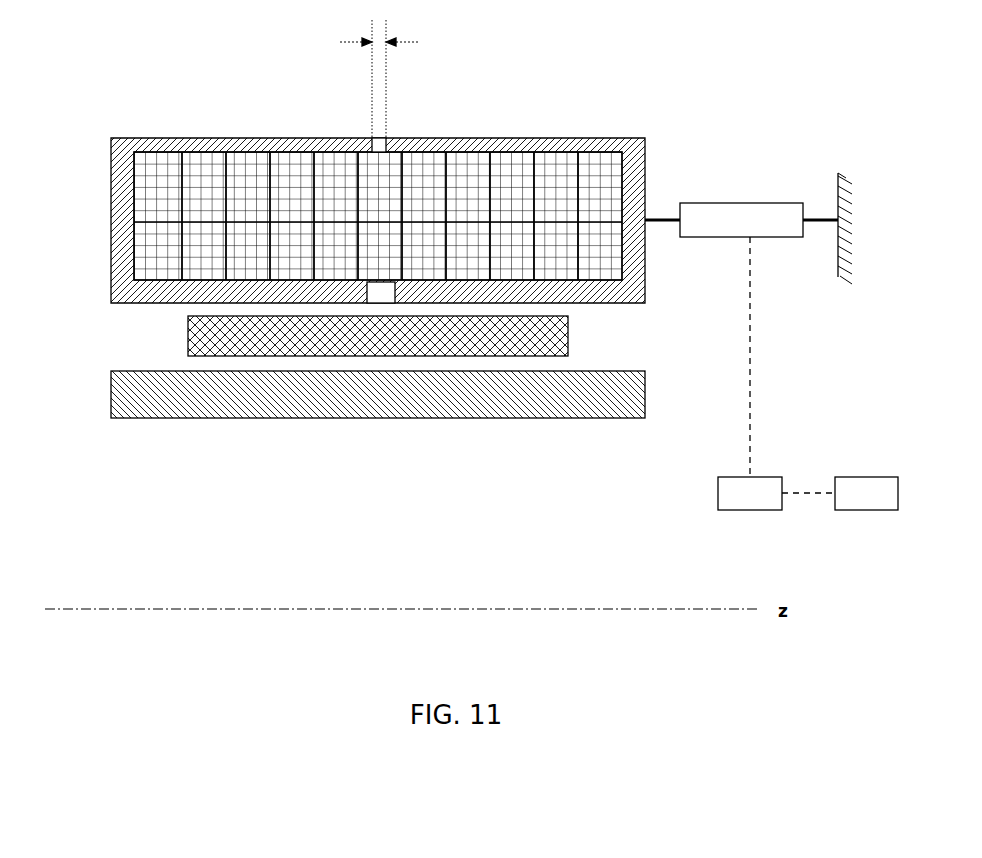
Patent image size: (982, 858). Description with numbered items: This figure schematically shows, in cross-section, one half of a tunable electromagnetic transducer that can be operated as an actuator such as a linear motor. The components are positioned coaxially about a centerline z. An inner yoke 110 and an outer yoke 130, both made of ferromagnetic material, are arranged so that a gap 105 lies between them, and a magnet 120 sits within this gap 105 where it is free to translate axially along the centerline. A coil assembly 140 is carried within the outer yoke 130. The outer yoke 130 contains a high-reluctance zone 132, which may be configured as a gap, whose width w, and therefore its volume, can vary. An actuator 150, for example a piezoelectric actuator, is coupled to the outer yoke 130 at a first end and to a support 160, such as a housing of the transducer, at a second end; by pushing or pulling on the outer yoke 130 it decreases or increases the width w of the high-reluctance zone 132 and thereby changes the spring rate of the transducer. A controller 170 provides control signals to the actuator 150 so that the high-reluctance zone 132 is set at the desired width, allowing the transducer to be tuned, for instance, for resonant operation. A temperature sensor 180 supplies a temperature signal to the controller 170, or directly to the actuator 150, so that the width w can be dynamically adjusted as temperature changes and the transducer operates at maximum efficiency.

The gap 105 is at (152, 338).
The inner yoke 110 is at (645, 398).
The magnet 120 is at (568, 338).
The outer yoke 130 is at (425, 161).
The high-reluctance zone 132 is at (372, 138).
The coil assembly 140 is at (480, 160).
The actuator 150 is at (740, 203).
The support 160 is at (846, 280).
The controller 170 is at (727, 510).
The temperature sensor 180 is at (876, 510).